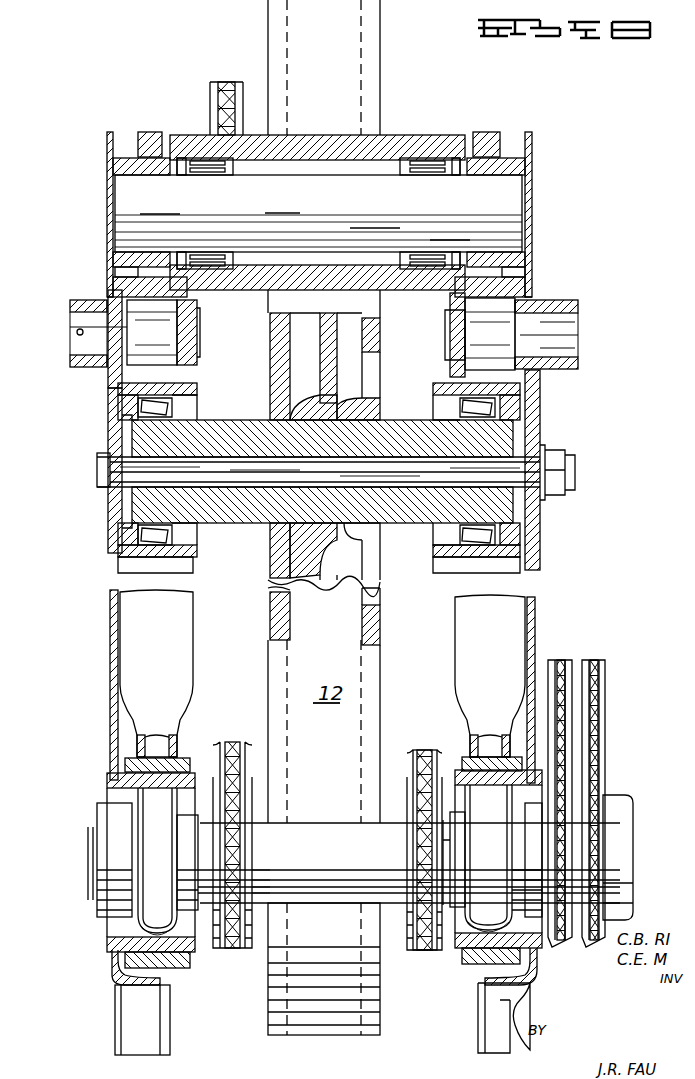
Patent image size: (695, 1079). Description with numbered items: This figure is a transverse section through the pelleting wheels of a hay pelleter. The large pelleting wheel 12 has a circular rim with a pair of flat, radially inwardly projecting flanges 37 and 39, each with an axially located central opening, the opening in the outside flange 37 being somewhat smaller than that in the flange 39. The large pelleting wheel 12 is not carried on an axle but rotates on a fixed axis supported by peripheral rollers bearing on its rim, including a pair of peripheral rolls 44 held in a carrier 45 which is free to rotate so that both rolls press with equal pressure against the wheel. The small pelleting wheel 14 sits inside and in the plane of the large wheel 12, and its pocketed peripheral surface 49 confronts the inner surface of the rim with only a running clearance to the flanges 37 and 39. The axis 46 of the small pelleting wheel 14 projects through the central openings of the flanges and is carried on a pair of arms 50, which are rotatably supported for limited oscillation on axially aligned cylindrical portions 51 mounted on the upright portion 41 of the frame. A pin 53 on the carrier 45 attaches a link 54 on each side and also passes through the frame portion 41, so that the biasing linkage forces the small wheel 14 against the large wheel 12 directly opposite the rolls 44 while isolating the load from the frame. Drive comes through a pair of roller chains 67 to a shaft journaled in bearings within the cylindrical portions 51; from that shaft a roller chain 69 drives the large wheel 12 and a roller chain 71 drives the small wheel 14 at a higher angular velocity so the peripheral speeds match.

The large pelleting wheel 12 is at (324, 517).
The small pelleting wheel 14 is at (380, 552).
The flange 37 is at (270, 612).
The flange 39 is at (382, 612).
The upright portion of the frame 41 is at (110, 648).
The peripheral rolls 44 is at (410, 140).
The carrier 45 is at (152, 132).
The axis 46 is at (252, 510).
The peripheral surface 49 is at (328, 410).
The arms 50 is at (180, 660).
The cylindrical portions 51 is at (195, 950).
The pin 53 is at (70, 328).
The link 54 is at (450, 300).
The roller chains 67 is at (593, 662).
The roller chain 69 is at (222, 125).
The roller chain 71 is at (421, 752).